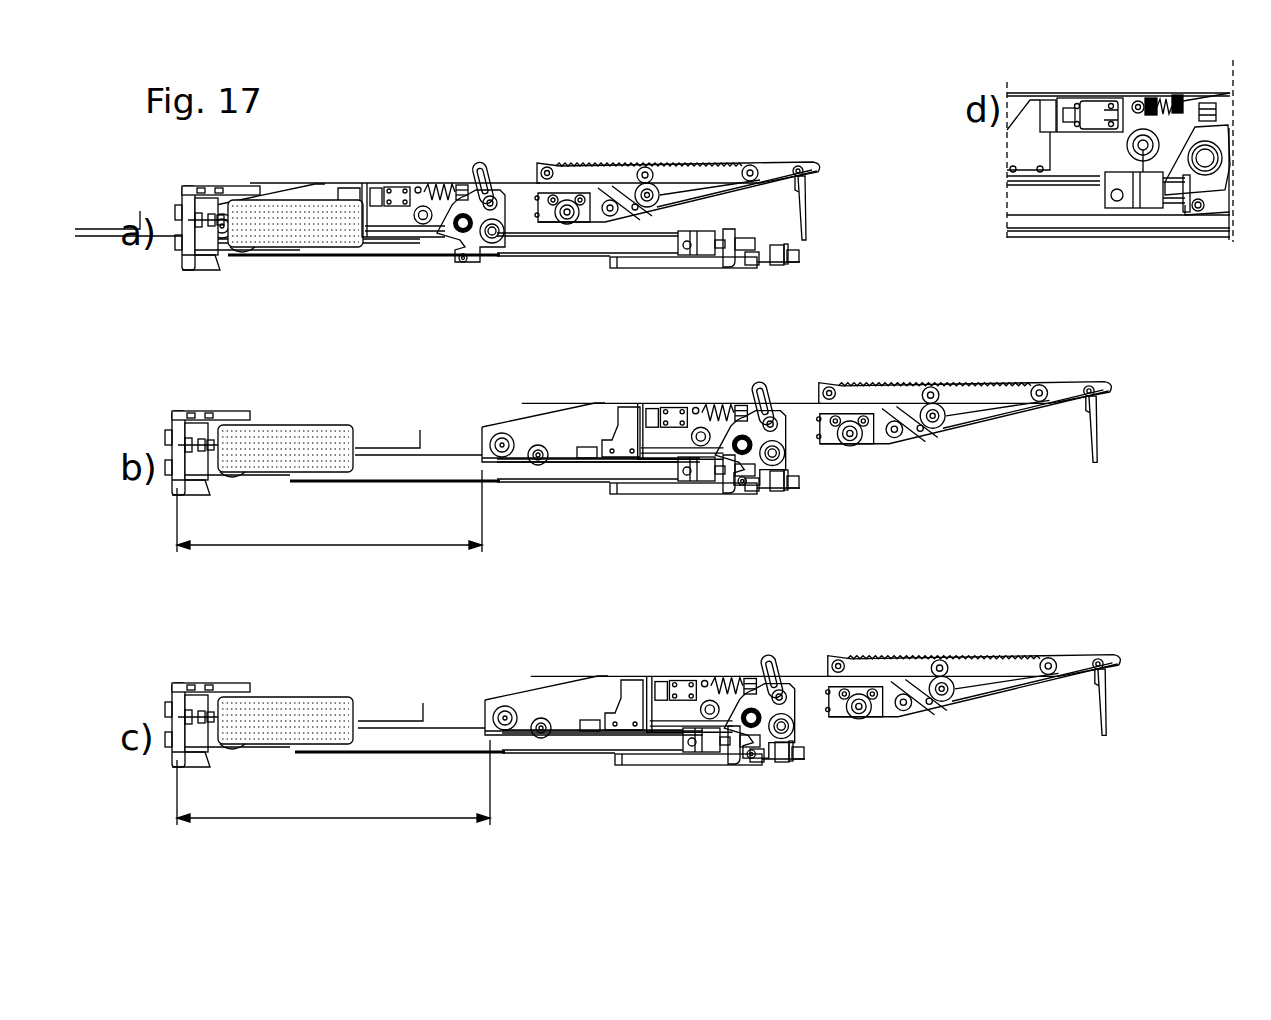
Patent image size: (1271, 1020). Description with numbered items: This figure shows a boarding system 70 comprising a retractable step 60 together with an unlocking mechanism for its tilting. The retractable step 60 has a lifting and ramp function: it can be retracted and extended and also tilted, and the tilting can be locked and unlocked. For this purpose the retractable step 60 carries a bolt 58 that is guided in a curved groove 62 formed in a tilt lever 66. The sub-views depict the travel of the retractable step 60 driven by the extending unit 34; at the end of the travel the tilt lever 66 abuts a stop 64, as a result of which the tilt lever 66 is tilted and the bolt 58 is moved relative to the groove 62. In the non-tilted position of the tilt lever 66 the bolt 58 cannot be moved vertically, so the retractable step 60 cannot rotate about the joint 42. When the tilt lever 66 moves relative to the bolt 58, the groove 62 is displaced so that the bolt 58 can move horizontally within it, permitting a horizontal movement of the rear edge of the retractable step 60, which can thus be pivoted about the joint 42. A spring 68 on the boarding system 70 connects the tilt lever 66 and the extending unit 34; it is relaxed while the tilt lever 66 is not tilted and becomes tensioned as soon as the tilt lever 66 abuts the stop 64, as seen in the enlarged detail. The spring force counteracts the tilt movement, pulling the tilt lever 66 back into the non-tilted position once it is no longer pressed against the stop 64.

The boarding system 70 is at (572, 128).
The spring 68 is at (418, 197).
The curved groove 62 is at (478, 168).
The bolt 58 is at (498, 192).
The tilt lever 66 is at (492, 247).
The retractable step 60 is at (682, 180).
The joint 42 is at (630, 196).
The extending unit 34 is at (624, 213).
The stop 64 is at (773, 266).